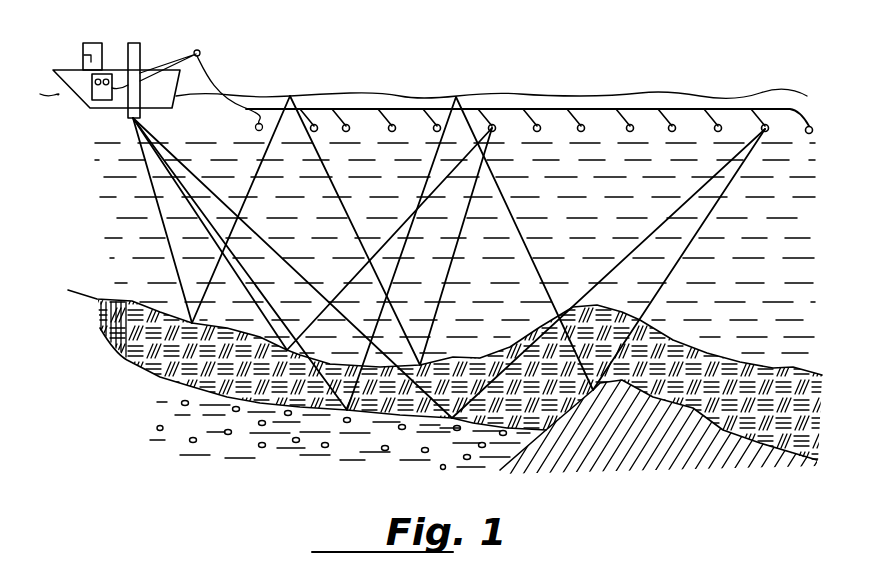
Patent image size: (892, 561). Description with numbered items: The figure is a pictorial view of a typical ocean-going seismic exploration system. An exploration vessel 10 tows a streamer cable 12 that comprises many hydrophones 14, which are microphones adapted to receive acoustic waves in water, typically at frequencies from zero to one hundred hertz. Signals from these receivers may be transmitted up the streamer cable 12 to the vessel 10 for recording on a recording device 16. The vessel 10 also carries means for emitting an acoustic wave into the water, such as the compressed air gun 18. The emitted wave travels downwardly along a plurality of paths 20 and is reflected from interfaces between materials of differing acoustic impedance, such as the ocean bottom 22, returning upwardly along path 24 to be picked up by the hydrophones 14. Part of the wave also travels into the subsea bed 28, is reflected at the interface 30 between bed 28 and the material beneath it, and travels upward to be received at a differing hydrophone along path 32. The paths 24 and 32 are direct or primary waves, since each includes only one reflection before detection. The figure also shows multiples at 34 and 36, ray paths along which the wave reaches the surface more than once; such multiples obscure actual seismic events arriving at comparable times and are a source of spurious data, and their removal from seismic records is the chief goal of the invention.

The exploration vessel 10 is at (66, 70).
The streamer cable 12 is at (401, 109).
The hydrophones 14 is at (541, 130).
The recording device 16 is at (98, 97).
The compressed air gun 18 is at (139, 43).
The paths 20 is at (150, 205).
The ocean bottom 22 is at (128, 298).
The path 24 is at (392, 237).
The subsea bed 28 is at (165, 352).
The interface 30 is at (228, 400).
The path 32 is at (651, 233).
The multiple 34 is at (255, 188).
The multiple 36 is at (516, 224).